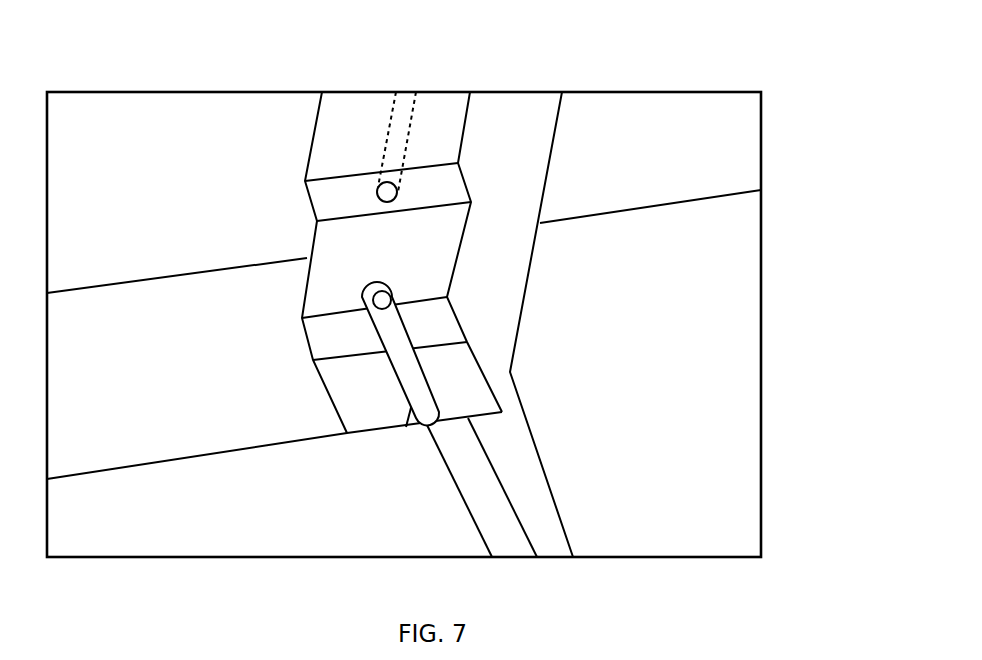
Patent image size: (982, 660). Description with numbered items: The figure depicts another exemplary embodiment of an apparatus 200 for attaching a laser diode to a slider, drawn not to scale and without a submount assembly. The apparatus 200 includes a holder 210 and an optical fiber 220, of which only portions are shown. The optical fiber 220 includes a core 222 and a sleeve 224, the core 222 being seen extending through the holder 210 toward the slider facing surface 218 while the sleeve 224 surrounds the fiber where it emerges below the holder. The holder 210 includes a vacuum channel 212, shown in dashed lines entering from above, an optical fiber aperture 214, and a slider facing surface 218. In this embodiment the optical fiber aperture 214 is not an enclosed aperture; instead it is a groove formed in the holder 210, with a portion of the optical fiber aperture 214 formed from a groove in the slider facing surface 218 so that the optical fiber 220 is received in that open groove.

The apparatus 200 is at (452, 53).
The holder 210 is at (761, 353).
The vacuum channel 212 is at (408, 92).
The optical fiber aperture 214 is at (383, 283).
The slider facing surface 218 is at (447, 372).
The optical fiber 220 is at (515, 585).
The core 222 is at (398, 374).
The sleeve 224 is at (513, 557).